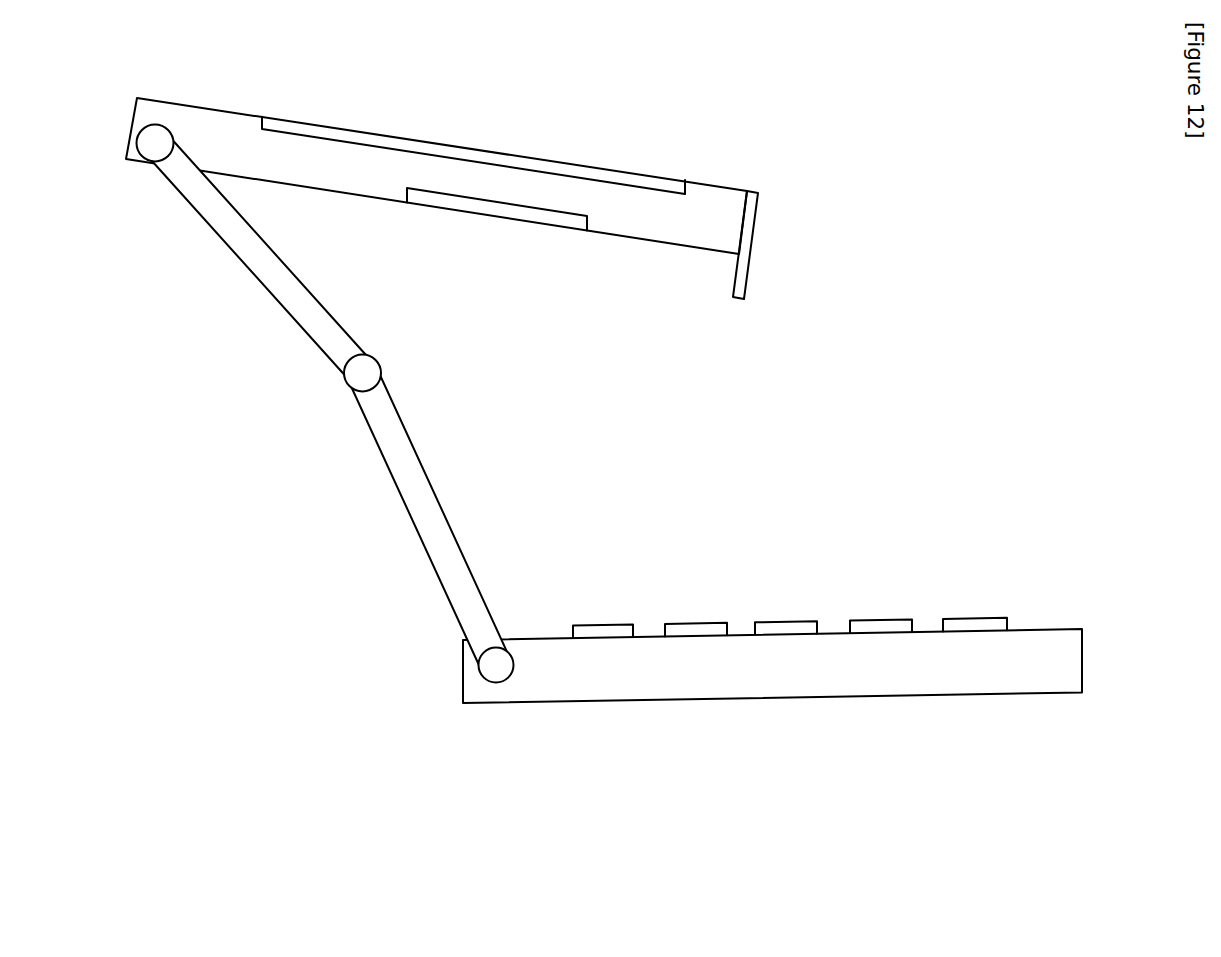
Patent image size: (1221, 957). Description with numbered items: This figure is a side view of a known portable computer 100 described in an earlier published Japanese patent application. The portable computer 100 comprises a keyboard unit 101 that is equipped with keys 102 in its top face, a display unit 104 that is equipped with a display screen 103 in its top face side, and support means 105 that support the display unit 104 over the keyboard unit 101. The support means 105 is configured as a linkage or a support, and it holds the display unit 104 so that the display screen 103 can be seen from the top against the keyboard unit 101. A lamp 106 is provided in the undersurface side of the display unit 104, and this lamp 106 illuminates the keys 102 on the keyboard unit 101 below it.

The portable computer 100 is at (604, 423).
The keyboard unit 101 is at (715, 697).
The keys 102 is at (795, 621).
The display screen 103 is at (478, 148).
The display unit 104 is at (713, 183).
The support means 105 is at (261, 284).
The lamp 106 is at (507, 218).